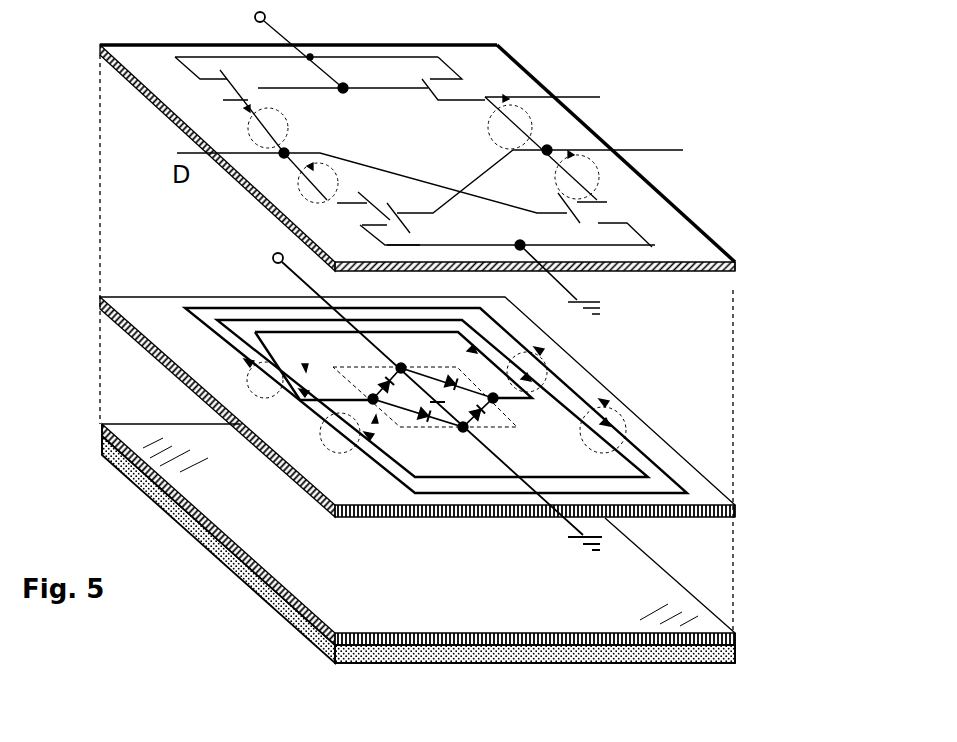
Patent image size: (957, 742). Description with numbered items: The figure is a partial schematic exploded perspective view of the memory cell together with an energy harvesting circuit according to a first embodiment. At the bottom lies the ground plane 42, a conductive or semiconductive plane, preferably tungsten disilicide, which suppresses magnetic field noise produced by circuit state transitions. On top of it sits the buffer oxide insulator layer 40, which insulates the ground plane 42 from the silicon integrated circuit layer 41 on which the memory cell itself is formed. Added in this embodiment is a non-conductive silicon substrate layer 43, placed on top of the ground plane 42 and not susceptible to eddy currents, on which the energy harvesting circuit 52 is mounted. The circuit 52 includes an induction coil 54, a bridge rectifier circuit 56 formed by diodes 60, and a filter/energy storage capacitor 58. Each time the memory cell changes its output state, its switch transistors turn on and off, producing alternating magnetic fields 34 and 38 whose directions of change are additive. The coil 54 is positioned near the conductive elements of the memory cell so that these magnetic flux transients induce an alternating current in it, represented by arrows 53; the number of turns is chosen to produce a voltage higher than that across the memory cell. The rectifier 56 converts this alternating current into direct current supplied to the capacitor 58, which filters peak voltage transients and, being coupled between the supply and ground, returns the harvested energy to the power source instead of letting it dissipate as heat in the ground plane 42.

The silicon integrated circuit layer 41 is at (100, 55).
The substrate layer 43 is at (118, 300).
The insulator layer 40 is at (100, 424).
The ground plane 42 is at (128, 481).
The magnetic field 34 is at (288, 126).
The magnetic field 38 is at (535, 113).
The energy harvesting circuit 52 is at (237, 307).
The arrows 53 is at (222, 349).
The induction coil 54 is at (402, 366).
The bridge rectifier circuit 56 is at (512, 428).
The filter/energy storage capacitor 58 is at (434, 394).
The diodes 60 is at (380, 388).